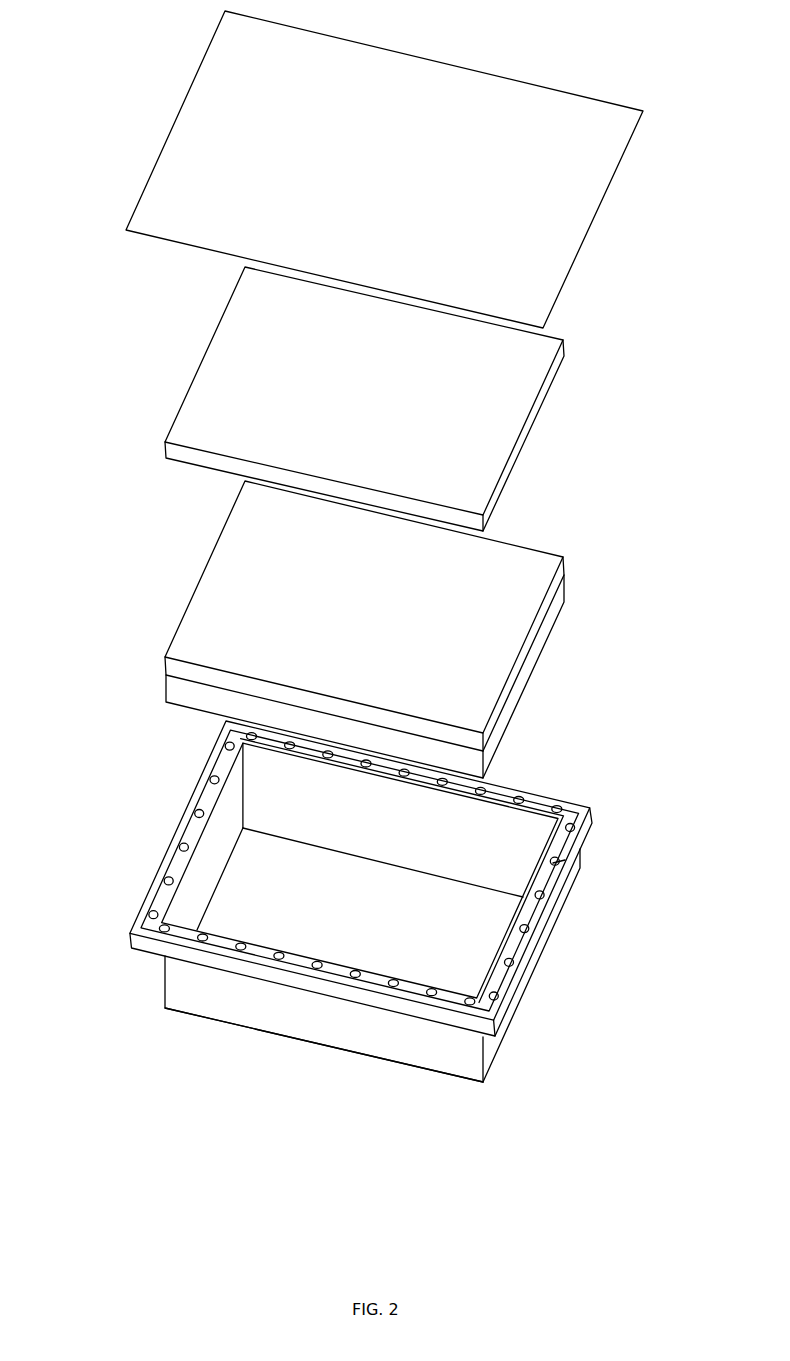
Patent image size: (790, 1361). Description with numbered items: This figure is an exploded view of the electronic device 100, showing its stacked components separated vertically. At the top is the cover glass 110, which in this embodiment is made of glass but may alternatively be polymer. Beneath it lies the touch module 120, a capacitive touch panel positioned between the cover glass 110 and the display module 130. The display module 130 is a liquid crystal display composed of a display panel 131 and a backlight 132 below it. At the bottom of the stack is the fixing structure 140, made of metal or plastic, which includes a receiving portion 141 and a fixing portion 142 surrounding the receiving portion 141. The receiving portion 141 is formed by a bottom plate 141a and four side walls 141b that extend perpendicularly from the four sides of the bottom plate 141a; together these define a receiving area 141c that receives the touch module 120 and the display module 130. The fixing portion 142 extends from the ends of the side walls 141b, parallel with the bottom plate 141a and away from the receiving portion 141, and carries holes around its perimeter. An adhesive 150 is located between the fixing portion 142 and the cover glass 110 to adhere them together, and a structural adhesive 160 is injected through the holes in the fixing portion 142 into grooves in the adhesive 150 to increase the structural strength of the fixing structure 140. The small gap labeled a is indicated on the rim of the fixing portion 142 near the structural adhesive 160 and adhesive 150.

The electronic device 100 is at (125, 1128).
The cover glass 110 is at (600, 208).
The touch module 120 is at (530, 430).
The display module 130 is at (430, 629).
The display panel 131 is at (537, 568).
The backlight 132 is at (402, 676).
The fixing structure 140 is at (385, 926).
The receiving portion 141 is at (268, 863).
The bottom plate 141a is at (310, 1042).
The side walls 141b is at (260, 1008).
The receiving area 141c is at (433, 935).
The fixing portion 142 is at (145, 952).
The adhesive 150 is at (577, 805).
The structural adhesive 160 is at (547, 867).
The gap a is at (565, 860).